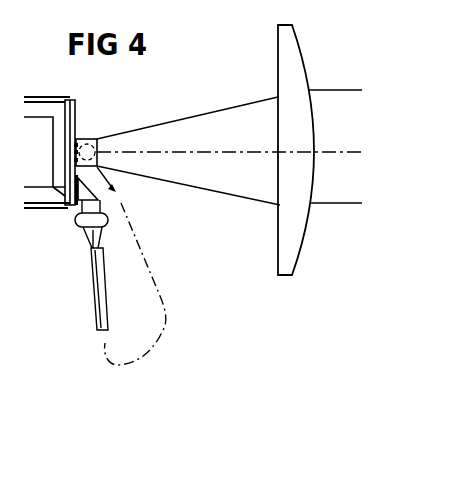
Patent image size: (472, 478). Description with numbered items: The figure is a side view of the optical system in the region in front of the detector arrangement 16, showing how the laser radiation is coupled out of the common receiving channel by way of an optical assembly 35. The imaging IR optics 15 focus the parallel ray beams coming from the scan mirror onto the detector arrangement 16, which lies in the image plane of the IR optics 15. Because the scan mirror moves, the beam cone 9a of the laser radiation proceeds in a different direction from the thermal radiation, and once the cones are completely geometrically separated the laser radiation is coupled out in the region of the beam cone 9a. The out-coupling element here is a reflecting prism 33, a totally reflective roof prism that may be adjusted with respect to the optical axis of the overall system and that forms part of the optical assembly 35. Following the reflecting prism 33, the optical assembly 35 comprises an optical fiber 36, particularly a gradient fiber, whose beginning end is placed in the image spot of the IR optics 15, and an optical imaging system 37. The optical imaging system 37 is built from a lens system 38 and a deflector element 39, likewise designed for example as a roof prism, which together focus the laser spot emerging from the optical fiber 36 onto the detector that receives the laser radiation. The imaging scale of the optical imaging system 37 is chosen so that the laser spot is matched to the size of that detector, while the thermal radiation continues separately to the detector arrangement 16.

The imaging IR optics 15 is at (290, 50).
The detector arrangement 16 is at (85, 101).
The reflecting prism 33 is at (90, 140).
The deflector element 39 is at (105, 197).
The optical imaging system 37 is at (66, 216).
The lens system 38 is at (106, 223).
The optical fiber 36 is at (93, 285).
The optical assembly 35 is at (116, 377).
The beam cone of the laser radiation 9a is at (235, 196).